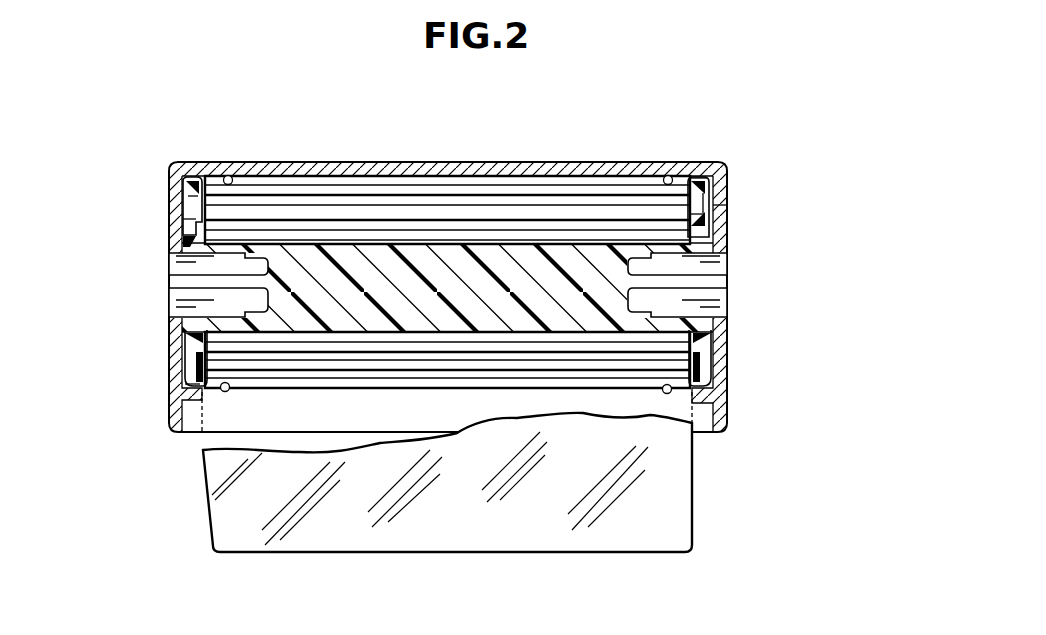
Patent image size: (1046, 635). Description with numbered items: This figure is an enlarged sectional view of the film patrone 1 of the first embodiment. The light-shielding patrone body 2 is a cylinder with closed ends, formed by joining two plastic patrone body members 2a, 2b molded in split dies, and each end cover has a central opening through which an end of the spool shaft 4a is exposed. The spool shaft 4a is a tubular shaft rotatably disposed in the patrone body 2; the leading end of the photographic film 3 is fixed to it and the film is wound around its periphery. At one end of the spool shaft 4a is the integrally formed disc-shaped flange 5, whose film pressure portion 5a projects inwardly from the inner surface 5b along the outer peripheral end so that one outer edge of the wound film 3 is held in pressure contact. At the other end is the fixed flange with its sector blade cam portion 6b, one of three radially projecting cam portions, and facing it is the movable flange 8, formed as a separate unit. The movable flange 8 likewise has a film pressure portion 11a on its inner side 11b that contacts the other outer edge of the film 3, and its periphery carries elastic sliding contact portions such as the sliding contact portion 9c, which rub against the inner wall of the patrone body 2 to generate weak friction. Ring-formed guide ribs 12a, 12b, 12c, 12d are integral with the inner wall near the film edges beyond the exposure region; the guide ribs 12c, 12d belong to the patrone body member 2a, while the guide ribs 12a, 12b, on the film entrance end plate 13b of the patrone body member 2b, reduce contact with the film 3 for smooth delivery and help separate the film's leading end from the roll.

The film patrone 1 is at (437, 163).
The patrone body 2 is at (306, 170).
The patrone body member 2a is at (183, 223).
The patrone body member 2b is at (185, 388).
The photographic film 3 is at (375, 195).
The spool shaft 4a is at (520, 245).
The flange 5 is at (196, 350).
The film pressure portion 5a is at (207, 176).
The inner surface 5b is at (186, 202).
The sector blade cam portion 6b is at (712, 350).
The movable flange 8 is at (727, 213).
The sliding contact portion 9c is at (706, 177).
The film pressure portion 11a is at (690, 178).
The inner side 11b is at (687, 215).
The guide rib 12a is at (222, 392).
The guide rib 12b is at (667, 394).
The guide rib 12c is at (228, 176).
The guide rib 12d is at (670, 177).
The film entrance end plate 13b is at (277, 418).